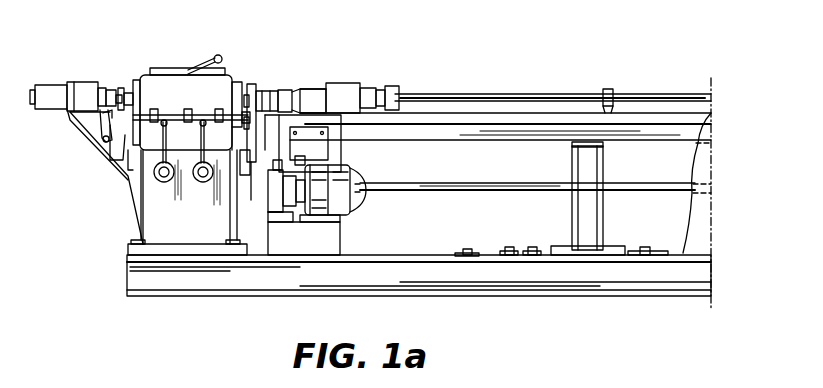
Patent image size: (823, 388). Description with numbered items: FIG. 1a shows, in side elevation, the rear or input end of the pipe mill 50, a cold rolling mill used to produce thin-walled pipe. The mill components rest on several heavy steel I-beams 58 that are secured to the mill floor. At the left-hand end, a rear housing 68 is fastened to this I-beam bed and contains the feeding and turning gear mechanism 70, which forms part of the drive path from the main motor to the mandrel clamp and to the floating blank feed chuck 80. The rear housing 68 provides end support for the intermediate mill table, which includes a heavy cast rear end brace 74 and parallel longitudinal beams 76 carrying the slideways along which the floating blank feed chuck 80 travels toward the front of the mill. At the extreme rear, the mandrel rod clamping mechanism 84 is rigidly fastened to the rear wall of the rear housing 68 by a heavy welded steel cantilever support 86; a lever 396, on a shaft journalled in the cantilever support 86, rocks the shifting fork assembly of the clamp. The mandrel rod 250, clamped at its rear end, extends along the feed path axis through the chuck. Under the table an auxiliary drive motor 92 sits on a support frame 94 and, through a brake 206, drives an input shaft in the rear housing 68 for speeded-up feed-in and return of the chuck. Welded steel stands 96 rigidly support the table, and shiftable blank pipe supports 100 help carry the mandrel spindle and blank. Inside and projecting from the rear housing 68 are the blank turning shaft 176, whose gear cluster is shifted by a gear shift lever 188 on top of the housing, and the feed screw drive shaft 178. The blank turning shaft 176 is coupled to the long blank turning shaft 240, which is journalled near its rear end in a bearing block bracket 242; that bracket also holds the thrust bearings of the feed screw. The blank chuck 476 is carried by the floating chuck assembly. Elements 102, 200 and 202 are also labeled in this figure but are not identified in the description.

The pipe mill 50 is at (473, 86).
The heavy steel I-beams 58 is at (531, 292).
The rear housing 68 is at (168, 215).
The feeding and turning gear mechanism 70 is at (165, 200).
The rear end brace 74 is at (244, 140).
The parallel longitudinal beams 76 is at (530, 133).
The floating blank feed chuck 80 is at (344, 82).
The mandrel rod clamping mechanism 84 is at (62, 76).
The cantilever support 86 is at (90, 137).
The auxiliary drive motor 92 is at (358, 165).
The support frame 94 is at (340, 248).
The welded steel stands 96 is at (571, 216).
The blank pipe supports 100 is at (611, 90).
The control box 102 is at (295, 124).
The blank turning shaft 176 is at (249, 84).
The feed screw drive shaft 178 is at (236, 110).
The gear shift lever 188 is at (187, 67).
The gusset 200 is at (165, 153).
The hanging weights 202 is at (187, 162).
The brake 206 is at (284, 216).
The long blank turning shaft 240 is at (264, 90).
The bearing block bracket 242 is at (287, 89).
The mandrel rod 250 is at (128, 88).
The lever 396 is at (98, 118).
The blank chuck 476 is at (392, 85).